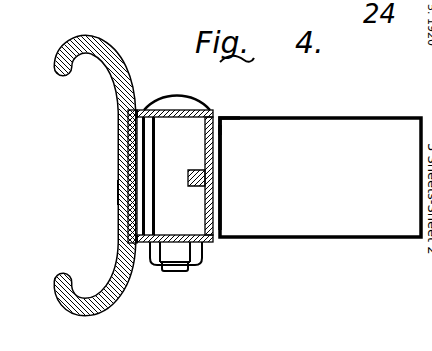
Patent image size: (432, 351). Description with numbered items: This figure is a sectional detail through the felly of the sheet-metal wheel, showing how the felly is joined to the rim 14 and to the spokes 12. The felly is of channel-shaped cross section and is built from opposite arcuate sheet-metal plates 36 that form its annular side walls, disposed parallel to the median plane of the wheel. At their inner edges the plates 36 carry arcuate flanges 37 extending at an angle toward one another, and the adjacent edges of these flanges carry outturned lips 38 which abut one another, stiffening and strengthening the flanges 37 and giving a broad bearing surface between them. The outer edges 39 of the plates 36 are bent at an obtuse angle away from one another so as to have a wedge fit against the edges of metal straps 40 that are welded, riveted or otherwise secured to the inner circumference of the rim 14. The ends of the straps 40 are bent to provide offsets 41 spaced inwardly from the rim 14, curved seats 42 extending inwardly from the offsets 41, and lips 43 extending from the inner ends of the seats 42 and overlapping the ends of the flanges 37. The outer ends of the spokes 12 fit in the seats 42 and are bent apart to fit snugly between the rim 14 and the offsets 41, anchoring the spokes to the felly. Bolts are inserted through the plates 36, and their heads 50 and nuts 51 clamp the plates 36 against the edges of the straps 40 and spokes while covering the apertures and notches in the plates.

The spokes 12 is at (363, 138).
The rim 14 is at (120, 142).
The arcuate sections or plates 36 is at (182, 109).
The arcuate flanges 37 is at (221, 153).
The outturned lips 38 is at (192, 172).
The outer edges 39 is at (138, 110).
The metal straps 40 is at (126, 192).
The offsets 41 is at (146, 160).
The curved seats 42 is at (203, 262).
The lips 43 is at (221, 126).
The heads 50 is at (177, 97).
The nuts 51 is at (175, 252).